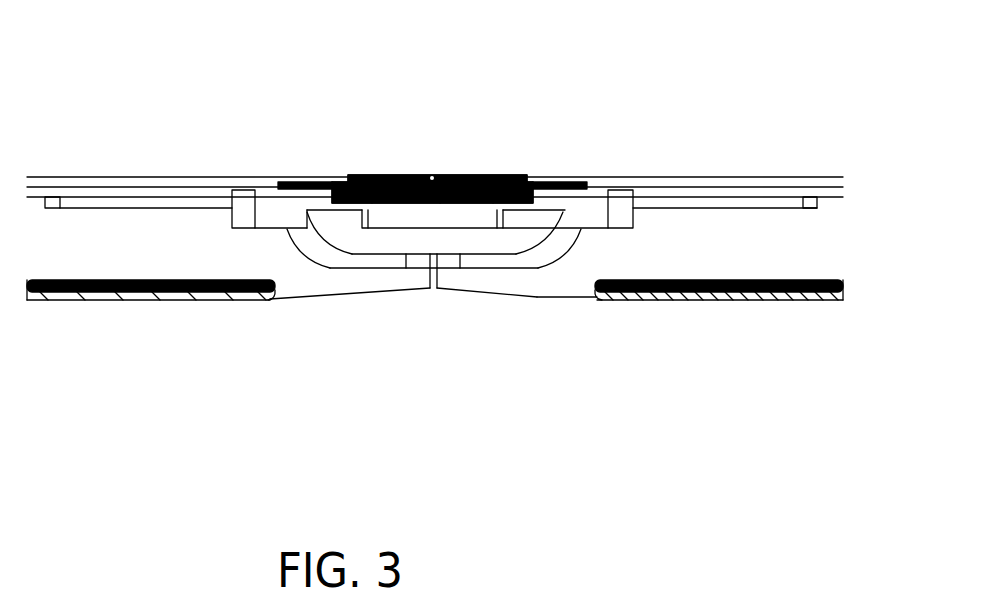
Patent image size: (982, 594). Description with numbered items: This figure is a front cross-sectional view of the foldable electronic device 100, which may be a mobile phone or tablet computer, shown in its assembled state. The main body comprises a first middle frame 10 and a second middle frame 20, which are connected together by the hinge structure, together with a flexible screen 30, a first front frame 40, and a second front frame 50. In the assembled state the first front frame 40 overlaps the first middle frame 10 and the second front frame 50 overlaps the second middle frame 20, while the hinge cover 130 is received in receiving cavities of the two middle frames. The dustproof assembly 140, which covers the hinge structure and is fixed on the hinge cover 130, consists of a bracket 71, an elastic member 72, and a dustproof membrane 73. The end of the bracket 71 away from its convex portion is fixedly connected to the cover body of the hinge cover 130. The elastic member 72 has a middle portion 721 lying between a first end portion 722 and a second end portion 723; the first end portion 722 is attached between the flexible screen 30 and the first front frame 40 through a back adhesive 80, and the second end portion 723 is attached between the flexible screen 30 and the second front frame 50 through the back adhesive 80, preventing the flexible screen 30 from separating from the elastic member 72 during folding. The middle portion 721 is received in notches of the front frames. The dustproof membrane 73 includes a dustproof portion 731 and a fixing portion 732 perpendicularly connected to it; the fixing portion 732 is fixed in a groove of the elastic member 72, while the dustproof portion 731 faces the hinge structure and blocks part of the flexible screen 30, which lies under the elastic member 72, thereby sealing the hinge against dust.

The foldable electronic device 100 is at (415, 47).
The first middle frame 10 is at (675, 263).
The second middle frame 20 is at (198, 258).
The flexible screen 30 is at (258, 198).
The first front frame 40 is at (715, 183).
The second front frame 50 is at (165, 183).
The back adhesive 80 is at (300, 186).
The hinge cover 130 is at (357, 243).
The dustproof assembly 140 is at (408, 310).
The bracket 71 is at (443, 200).
The elastic member 72 is at (369, 309).
The middle portion 721 is at (432, 177).
The first end portion 722 is at (322, 190).
The second end portion 723 is at (545, 183).
The dustproof membrane 73 is at (430, 305).
The dustproof portion 731 is at (465, 197).
The fixing portion 732 is at (398, 182).